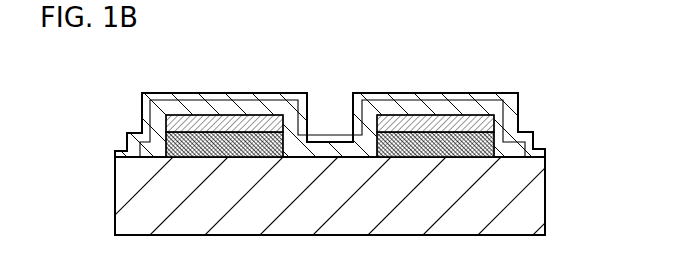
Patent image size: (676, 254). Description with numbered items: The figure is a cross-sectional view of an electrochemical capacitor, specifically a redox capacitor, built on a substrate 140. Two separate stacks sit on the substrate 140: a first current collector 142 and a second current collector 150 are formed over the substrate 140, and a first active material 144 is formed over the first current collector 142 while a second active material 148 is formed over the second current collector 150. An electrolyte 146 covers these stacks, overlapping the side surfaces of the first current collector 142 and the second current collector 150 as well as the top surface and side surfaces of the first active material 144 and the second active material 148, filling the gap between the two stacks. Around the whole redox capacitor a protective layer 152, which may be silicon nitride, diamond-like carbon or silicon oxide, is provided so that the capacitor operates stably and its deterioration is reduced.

The substrate 140 is at (308, 172).
The first current collector 142 is at (193, 136).
The first active material 144 is at (245, 121).
The electrolyte 146 is at (313, 177).
The second active material 148 is at (475, 113).
The second current collector 150 is at (420, 137).
The protective layer 152 is at (372, 97).